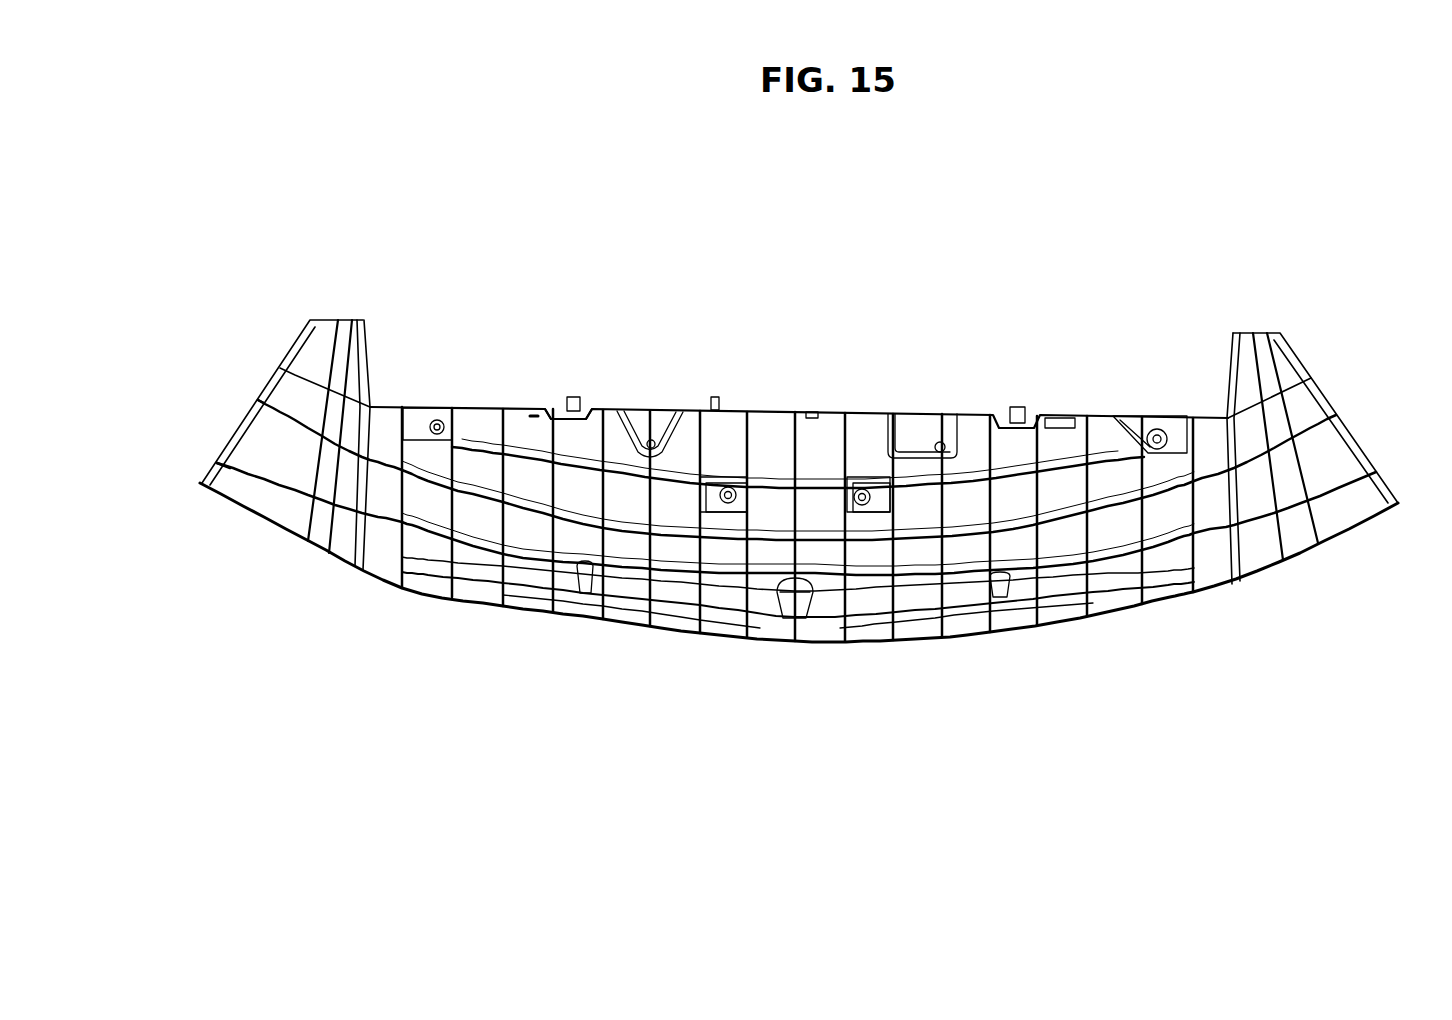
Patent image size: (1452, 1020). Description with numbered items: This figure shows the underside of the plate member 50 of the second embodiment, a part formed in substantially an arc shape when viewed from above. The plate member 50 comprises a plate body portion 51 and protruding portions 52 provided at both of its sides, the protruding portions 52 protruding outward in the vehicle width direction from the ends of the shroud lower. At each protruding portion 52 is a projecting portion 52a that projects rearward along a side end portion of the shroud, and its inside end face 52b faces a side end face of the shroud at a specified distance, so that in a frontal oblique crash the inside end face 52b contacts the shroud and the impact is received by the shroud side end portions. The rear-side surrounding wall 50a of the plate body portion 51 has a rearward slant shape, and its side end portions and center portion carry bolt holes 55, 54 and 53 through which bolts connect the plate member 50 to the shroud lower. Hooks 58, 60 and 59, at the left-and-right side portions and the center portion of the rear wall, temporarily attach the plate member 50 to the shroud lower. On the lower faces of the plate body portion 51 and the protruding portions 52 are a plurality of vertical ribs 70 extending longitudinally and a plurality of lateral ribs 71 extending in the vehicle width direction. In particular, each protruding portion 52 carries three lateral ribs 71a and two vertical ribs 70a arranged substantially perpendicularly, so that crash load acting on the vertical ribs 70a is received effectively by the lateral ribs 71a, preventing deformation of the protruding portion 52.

The plate member 50 is at (918, 320).
The rear-side surrounding wall 50a is at (967, 640).
The plate body portion 51 is at (806, 507).
The protruding portion 52 is at (775, 434).
The projecting portion 52a is at (317, 337).
The inside end face 52b is at (365, 353).
The bolt hole 53 is at (1058, 420).
The bolt hole 54 is at (811, 412).
The bolt hole 55 is at (533, 416).
The hook 58 is at (1015, 405).
The hook 59 is at (714, 397).
The hook 60 is at (575, 397).
The vertical rib 70 is at (497, 474).
The vertical rib 70a is at (272, 422).
The lateral rib 71 is at (1313, 423).
The lateral rib 71a is at (300, 373).